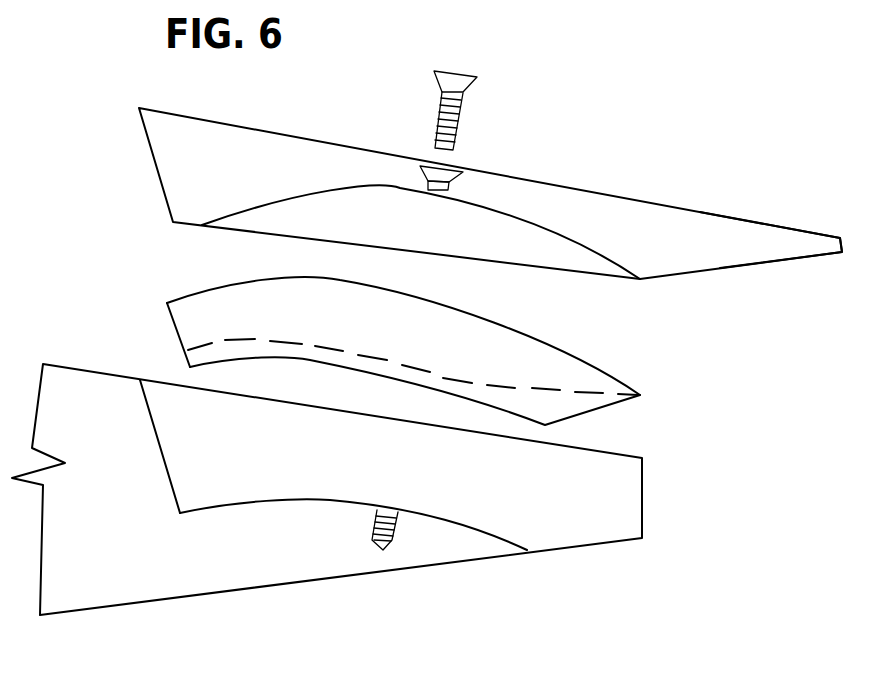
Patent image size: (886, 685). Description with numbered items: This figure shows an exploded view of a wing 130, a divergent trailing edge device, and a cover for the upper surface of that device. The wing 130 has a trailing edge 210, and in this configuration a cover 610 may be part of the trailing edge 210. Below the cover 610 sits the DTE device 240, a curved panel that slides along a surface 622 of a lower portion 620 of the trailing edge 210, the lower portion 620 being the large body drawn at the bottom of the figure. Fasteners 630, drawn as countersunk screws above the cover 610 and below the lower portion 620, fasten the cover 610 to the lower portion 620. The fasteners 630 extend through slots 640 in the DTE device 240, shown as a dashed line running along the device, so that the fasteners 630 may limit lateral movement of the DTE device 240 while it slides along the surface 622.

The wing 130 is at (102, 606).
The trailing edge 210 is at (602, 147).
The DTE device 240 is at (578, 349).
The cover 610 is at (705, 210).
The lower portion 620 is at (420, 565).
The surface 622 is at (458, 525).
The fasteners 630 is at (470, 73).
The slots 640 is at (237, 339).